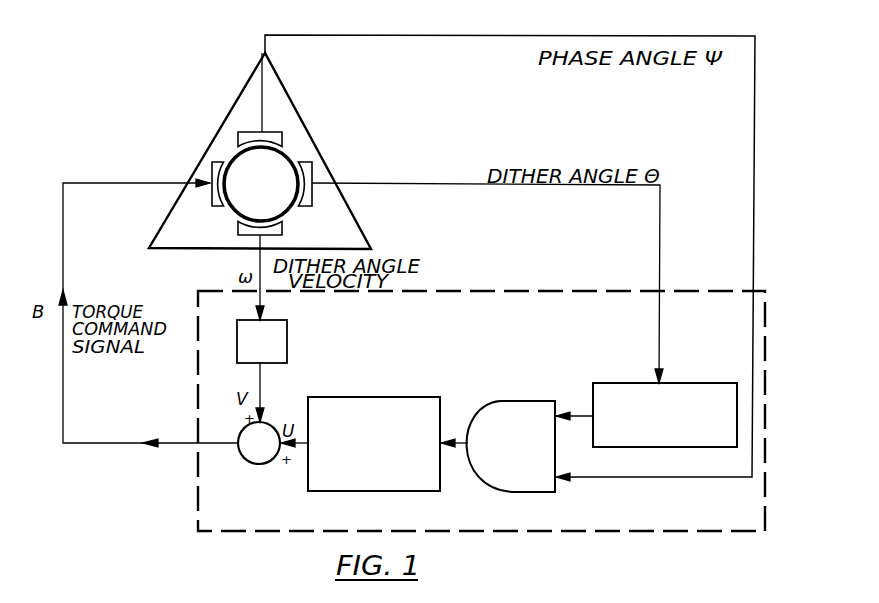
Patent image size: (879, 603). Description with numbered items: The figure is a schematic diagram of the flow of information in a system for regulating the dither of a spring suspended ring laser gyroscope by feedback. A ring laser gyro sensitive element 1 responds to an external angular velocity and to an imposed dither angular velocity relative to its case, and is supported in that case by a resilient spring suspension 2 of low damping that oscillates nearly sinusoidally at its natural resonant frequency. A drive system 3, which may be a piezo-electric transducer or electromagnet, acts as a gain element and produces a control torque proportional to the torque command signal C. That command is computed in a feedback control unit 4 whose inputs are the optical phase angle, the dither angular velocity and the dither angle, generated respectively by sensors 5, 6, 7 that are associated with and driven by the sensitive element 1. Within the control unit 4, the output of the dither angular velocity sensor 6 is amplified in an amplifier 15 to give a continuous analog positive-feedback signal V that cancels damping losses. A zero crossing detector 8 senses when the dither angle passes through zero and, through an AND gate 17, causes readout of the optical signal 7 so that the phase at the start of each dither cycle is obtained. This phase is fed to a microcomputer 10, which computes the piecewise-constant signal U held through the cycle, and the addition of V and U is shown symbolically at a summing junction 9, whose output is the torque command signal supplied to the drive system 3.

The ring laser gyro sensitive element 1 is at (347, 228).
The resilient spring suspension 2 is at (248, 168).
The drive system 3 is at (214, 193).
The feedback control unit 4 is at (438, 321).
The optical phase angle sensor 5 is at (308, 173).
The dither angular velocity sensor 6 is at (251, 237).
The dither angle sensor 7 is at (245, 138).
The zero crossing detector 8 is at (688, 393).
The summing junction 9 is at (255, 452).
The microcomputer 10 is at (432, 410).
The amplifier 15 is at (279, 349).
The AND gate 17 is at (518, 480).